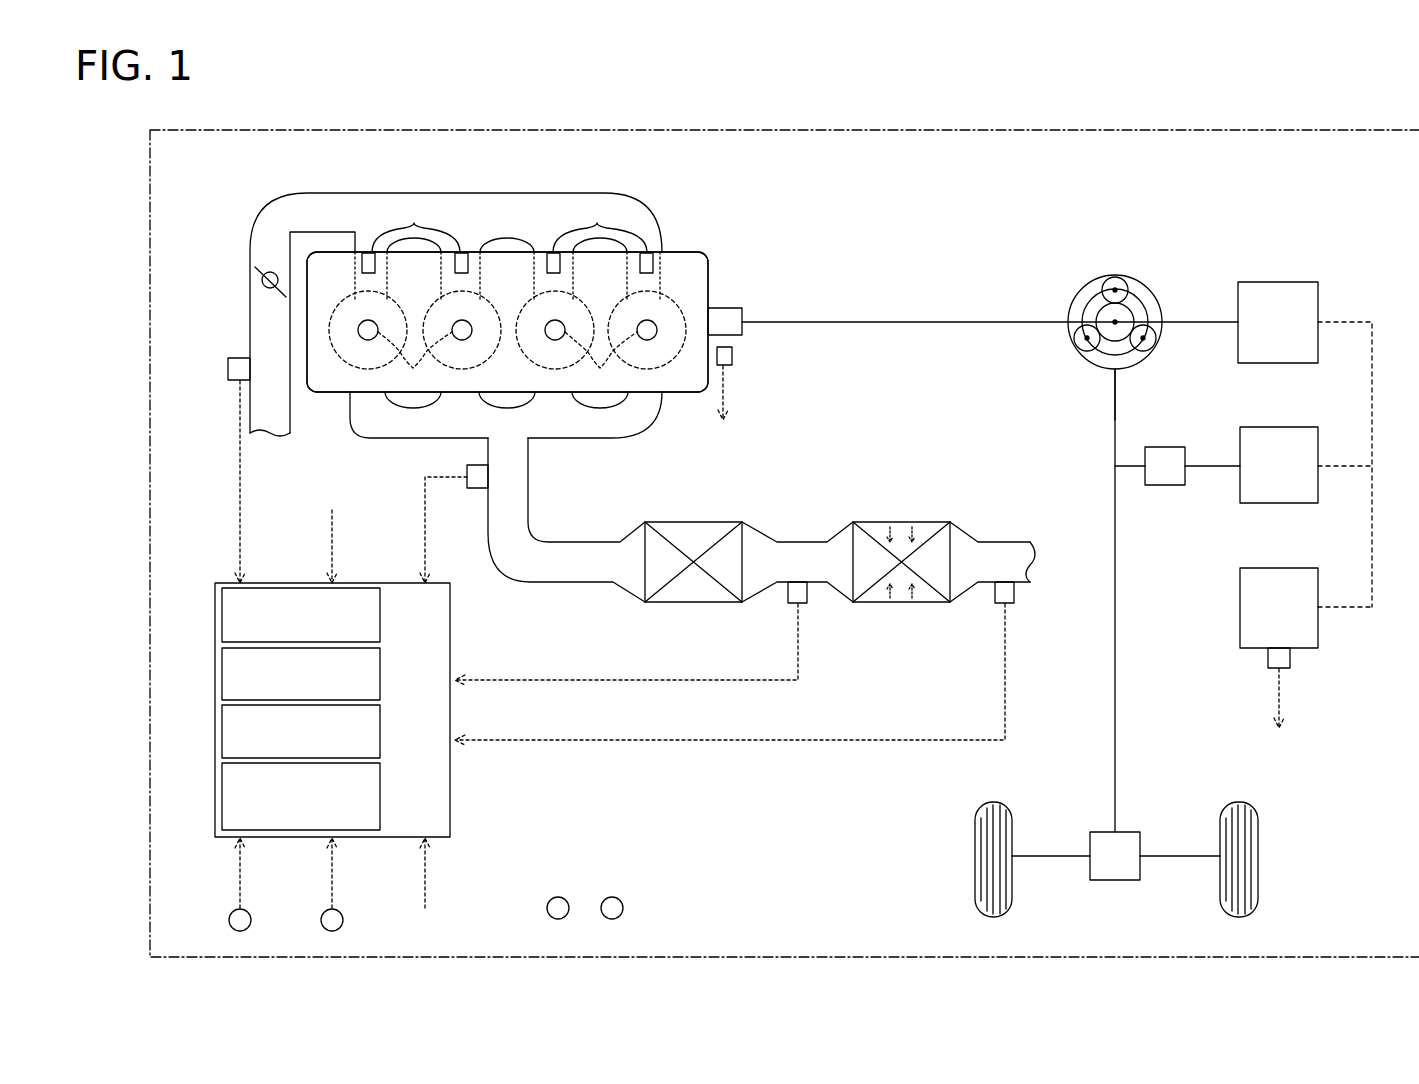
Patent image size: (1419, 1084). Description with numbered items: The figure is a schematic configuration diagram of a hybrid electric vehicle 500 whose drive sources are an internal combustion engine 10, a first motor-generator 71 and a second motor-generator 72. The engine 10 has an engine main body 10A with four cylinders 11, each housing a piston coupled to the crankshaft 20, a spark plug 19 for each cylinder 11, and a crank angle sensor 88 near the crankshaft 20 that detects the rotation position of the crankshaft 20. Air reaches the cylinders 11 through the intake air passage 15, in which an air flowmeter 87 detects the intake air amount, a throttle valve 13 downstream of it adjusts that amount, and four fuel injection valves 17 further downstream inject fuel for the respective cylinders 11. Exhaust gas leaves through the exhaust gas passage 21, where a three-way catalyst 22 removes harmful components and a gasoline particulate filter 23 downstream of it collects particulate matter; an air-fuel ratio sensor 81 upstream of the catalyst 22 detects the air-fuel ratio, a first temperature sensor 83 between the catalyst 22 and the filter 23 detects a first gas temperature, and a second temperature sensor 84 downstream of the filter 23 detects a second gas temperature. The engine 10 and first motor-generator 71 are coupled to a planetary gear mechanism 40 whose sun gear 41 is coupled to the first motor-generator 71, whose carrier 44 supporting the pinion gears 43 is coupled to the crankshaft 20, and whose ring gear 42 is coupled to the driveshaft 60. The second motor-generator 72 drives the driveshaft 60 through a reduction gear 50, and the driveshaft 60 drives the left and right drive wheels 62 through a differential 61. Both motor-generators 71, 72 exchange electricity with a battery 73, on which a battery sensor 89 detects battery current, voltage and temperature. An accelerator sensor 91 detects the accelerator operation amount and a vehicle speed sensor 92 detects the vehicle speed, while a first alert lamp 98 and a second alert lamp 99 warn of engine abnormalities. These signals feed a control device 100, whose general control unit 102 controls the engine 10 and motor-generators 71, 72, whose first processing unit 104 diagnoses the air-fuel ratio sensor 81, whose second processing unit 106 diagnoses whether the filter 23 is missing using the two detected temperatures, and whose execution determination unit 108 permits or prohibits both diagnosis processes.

The hybrid electric vehicle 500 is at (765, 130).
The internal combustion engine 10 is at (225, 204).
The engine main body 10A is at (322, 394).
The intake air passage 15 is at (325, 200).
The throttle valve 13 is at (271, 289).
The fuel injection valves 17 is at (507, 249).
The cylinders 11 is at (352, 312).
The spark plugs 19 is at (507, 370).
The crankshaft 20 is at (728, 307).
The exhaust gas passage 21 is at (645, 412).
The three-way catalyst 22 is at (718, 524).
The gasoline particulate filter 23 is at (925, 524).
The air-fuel ratio sensor 81 is at (478, 492).
The first temperature sensor 83 is at (808, 594).
The second temperature sensor 84 is at (1015, 594).
The air flowmeter 87 is at (240, 357).
The crank angle sensor 88 is at (733, 356).
The control device 100 is at (215, 603).
The general control unit 102 is at (381, 624).
The first processing unit 104 is at (381, 682).
The second processing unit 106 is at (381, 739).
The execution determination unit 108 is at (381, 796).
The accelerator sensor 91 is at (252, 924).
The vehicle speed sensor 92 is at (344, 924).
The first alert lamp 98 is at (547, 910).
The second alert lamp 99 is at (624, 911).
The planetary gear mechanism 40 is at (1091, 260).
The sun gear 41 is at (1148, 300).
The ring gear 42 is at (1093, 370).
The pinion gears 43 is at (1124, 286).
The carrier 44 is at (1083, 310).
The reduction gear 50 is at (1170, 447).
The driveshaft 60 is at (1115, 505).
The differential 61 is at (1115, 881).
The drive wheels 62 is at (974, 858).
The first motor-generator 71 is at (1282, 282).
The second motor-generator 72 is at (1282, 427).
The battery 73 is at (1282, 568).
The battery sensor 89 is at (1292, 656).